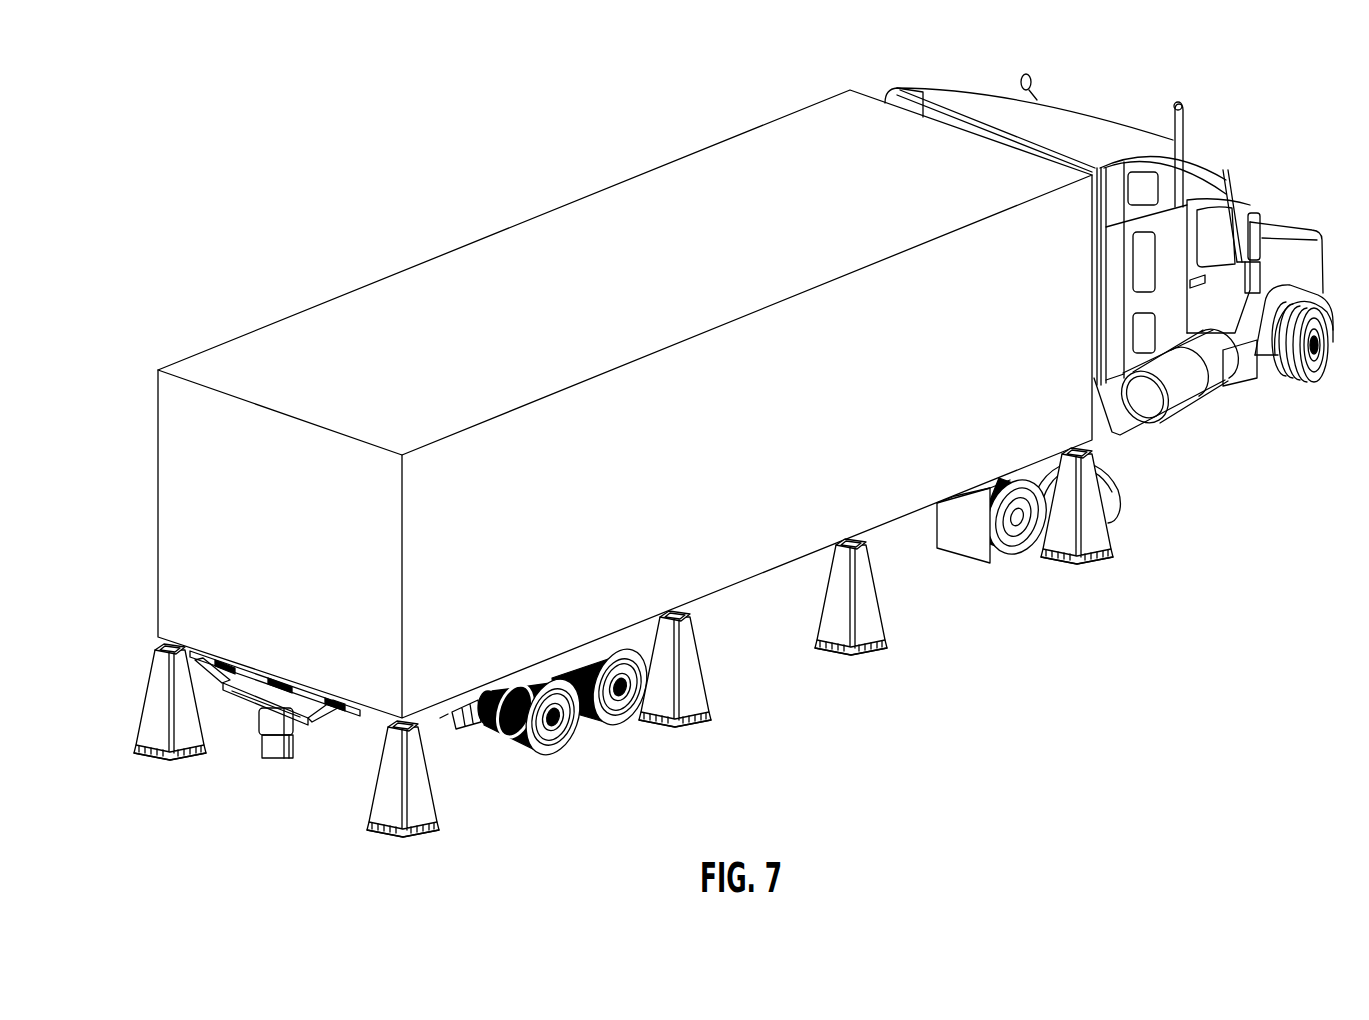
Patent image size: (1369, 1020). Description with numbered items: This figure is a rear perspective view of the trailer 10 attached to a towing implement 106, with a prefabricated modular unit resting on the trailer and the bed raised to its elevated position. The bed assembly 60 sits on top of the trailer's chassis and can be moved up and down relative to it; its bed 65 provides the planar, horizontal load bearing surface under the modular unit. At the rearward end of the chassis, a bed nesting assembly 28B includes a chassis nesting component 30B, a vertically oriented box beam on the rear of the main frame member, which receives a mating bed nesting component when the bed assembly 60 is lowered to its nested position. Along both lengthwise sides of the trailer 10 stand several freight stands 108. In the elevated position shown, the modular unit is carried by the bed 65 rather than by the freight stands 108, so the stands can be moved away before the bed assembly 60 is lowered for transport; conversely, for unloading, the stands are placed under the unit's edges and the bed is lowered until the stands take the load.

The trailer 10 is at (352, 723).
The bed nesting assembly 28B is at (261, 733).
The chassis nesting component 30B is at (287, 758).
The bed assembly 60 is at (223, 687).
The bed 65 is at (202, 668).
The towing implement 106 is at (1101, 127).
The freight stands 108 is at (152, 758).